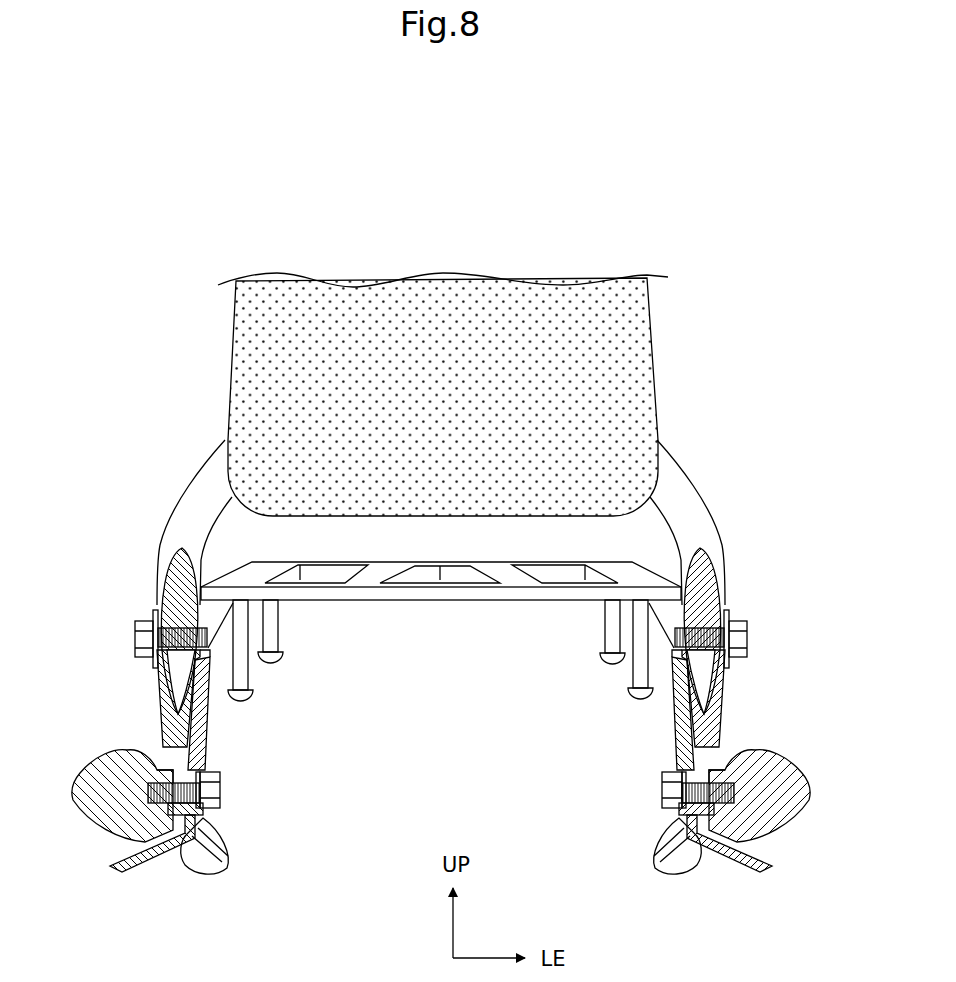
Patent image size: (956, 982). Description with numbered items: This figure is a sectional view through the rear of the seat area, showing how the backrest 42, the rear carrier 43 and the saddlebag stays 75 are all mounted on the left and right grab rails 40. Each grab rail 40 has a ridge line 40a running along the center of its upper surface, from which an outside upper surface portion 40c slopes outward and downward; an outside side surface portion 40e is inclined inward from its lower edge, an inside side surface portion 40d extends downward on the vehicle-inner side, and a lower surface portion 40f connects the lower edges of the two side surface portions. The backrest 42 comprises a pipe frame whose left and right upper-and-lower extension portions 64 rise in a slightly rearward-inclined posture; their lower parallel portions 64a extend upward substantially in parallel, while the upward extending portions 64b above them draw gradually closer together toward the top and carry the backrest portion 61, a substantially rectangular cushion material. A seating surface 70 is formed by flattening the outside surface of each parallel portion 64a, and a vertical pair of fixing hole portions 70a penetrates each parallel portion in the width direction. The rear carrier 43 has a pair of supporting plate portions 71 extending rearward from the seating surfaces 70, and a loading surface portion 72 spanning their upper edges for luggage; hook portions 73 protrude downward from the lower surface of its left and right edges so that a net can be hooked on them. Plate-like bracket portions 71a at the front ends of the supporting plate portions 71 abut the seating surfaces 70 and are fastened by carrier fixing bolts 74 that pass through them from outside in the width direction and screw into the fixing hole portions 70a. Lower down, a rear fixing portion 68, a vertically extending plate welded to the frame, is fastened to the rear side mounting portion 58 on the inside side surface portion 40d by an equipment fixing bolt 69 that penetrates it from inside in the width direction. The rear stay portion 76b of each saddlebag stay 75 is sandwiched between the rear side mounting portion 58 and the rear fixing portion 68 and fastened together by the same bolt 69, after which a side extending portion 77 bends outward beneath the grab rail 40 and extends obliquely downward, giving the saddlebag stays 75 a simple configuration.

The grab rail 40 is at (441, 831).
The ridge line 40a is at (158, 765).
The outside upper surface portion 40c is at (451, 761).
The inside side surface portion 40d is at (140, 752).
The outside side surface portion 40e is at (92, 810).
The lower surface portion 40f is at (185, 865).
The backrest 42 is at (484, 350).
The rear carrier 43 is at (441, 623).
The rear side mounting portion 58 is at (425, 886).
The backrest portion 61 is at (522, 282).
The upper-and-lower extension portion 64 is at (434, 553).
The parallel portion 64a is at (160, 560).
The upward extending portion 64b is at (205, 470).
The rear fixing portion 68 is at (206, 754).
The equipment fixing bolt 69 is at (222, 792).
The seating surface 70 is at (439, 681).
The fixing hole portion 70a is at (133, 630).
The supporting plate portion 71 is at (440, 662).
The plate-like bracket portion 71a is at (180, 700).
The loading surface portion 72 is at (370, 600).
The hook portion 73 is at (270, 662).
The carrier fixing bolt 74 is at (427, 614).
The saddlebag stay 75 is at (122, 878).
The stay portion 76b is at (217, 872).
The side extending portion 77 is at (148, 865).